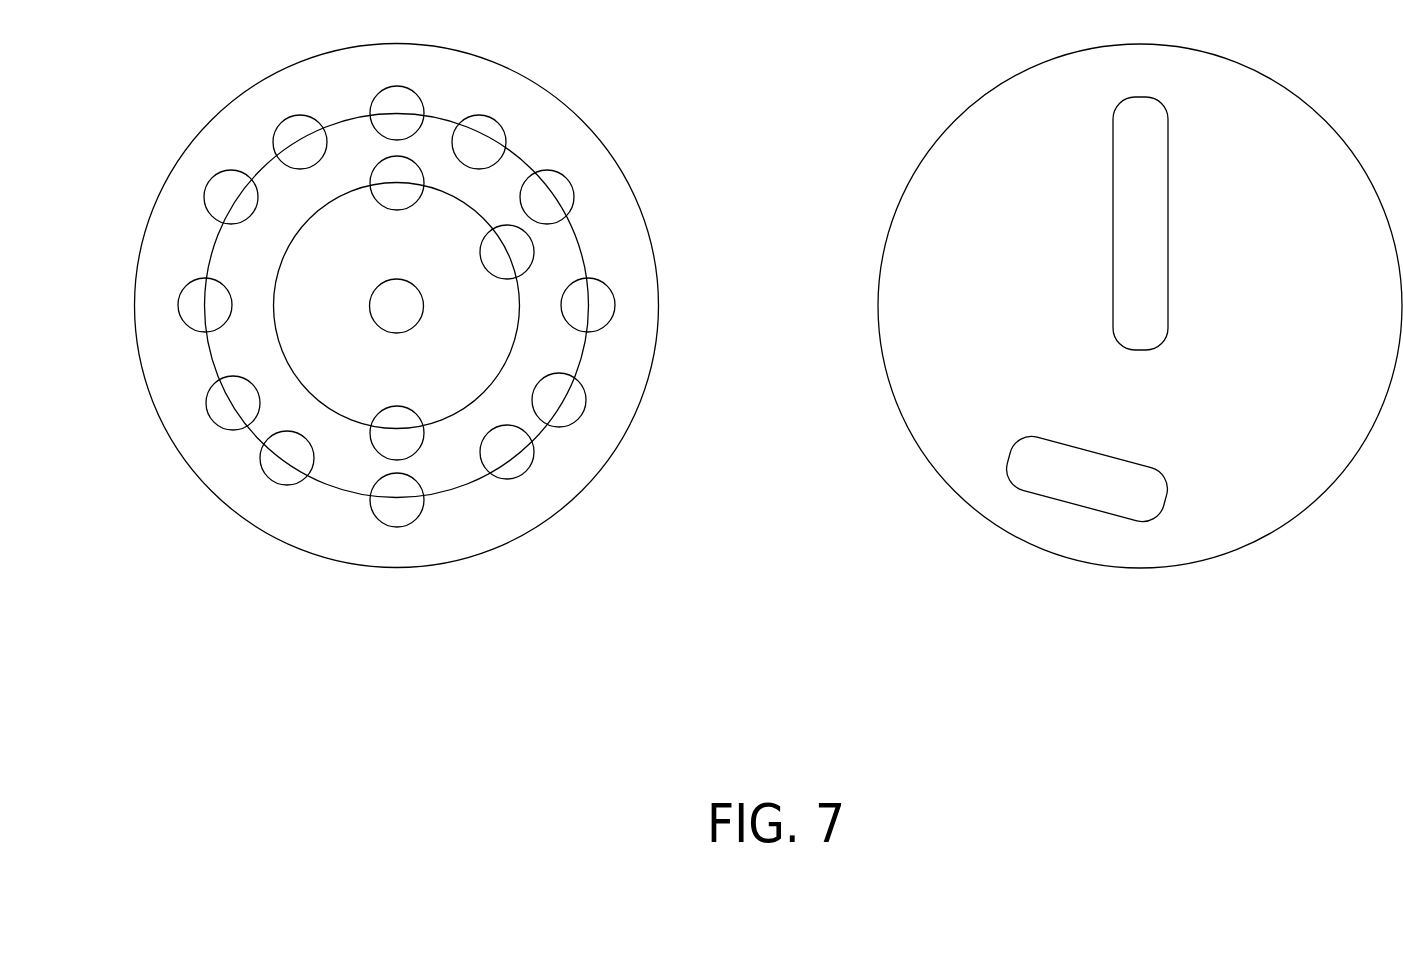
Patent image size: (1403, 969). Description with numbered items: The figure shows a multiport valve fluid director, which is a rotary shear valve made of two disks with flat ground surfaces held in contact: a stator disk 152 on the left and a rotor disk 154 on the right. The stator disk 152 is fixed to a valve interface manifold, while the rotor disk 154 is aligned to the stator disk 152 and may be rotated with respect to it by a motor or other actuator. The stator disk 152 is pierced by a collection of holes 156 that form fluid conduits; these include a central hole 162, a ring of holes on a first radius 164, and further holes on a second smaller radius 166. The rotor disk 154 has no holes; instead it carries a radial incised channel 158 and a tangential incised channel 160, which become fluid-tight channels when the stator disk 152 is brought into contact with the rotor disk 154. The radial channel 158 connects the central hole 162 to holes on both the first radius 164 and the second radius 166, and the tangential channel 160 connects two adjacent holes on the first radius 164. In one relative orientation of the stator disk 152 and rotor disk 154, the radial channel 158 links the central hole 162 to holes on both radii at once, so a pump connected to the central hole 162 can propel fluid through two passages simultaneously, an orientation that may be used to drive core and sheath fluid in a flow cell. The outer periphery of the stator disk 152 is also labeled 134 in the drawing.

The plate outer periphery 134 is at (492, 532).
The stator disk 152 is at (426, 342).
The rotor disk 154 is at (1140, 344).
The holes 156 is at (298, 127).
The radial incised channel 158 is at (1168, 252).
The tangential incised channel 160 is at (1128, 513).
The central hole 162 is at (382, 293).
The first radius 164 is at (272, 168).
The second smaller radius 166 is at (505, 290).